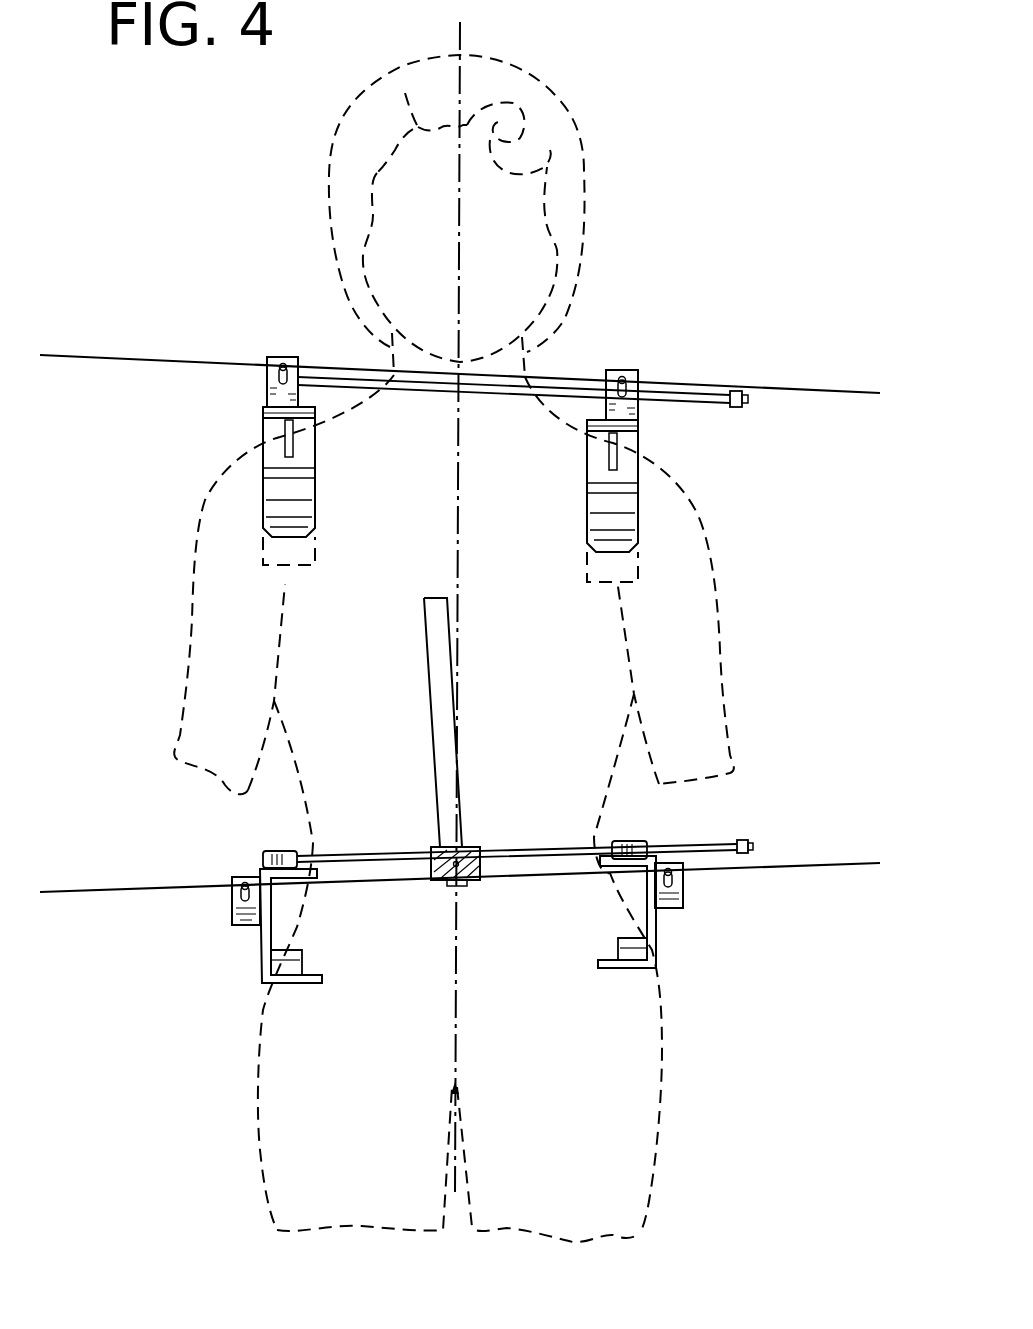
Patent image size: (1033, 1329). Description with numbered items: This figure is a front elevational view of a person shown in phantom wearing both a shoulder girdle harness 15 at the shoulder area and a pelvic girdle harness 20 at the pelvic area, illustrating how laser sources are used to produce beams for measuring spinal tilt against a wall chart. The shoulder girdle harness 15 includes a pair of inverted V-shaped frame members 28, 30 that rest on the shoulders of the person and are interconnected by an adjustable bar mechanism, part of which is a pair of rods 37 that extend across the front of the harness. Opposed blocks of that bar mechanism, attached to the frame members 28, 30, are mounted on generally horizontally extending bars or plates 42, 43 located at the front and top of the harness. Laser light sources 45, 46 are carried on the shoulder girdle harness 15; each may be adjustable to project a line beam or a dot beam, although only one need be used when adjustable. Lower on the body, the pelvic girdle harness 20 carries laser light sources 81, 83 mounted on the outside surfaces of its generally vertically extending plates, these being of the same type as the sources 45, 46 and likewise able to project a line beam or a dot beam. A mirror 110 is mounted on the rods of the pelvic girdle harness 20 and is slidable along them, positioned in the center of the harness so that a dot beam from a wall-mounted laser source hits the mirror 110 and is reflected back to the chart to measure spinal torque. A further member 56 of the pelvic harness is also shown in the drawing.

The shoulder girdle harness 15 is at (630, 356).
The pelvic girdle harness 20 is at (687, 828).
The inverted V-shaped frame member 28 is at (640, 450).
The inverted V-shaped frame member 30 is at (263, 432).
The rods 37 is at (514, 403).
The horizontally extending bar or plate 42 is at (640, 426).
The horizontally extending bar or plate 43 is at (263, 410).
The laser light source 45 is at (642, 374).
The laser light source 46 is at (282, 357).
The hip cross rod 56 is at (657, 860).
The laser light source 81 is at (683, 897).
The laser light source 83 is at (232, 912).
The mirror 110 is at (473, 847).